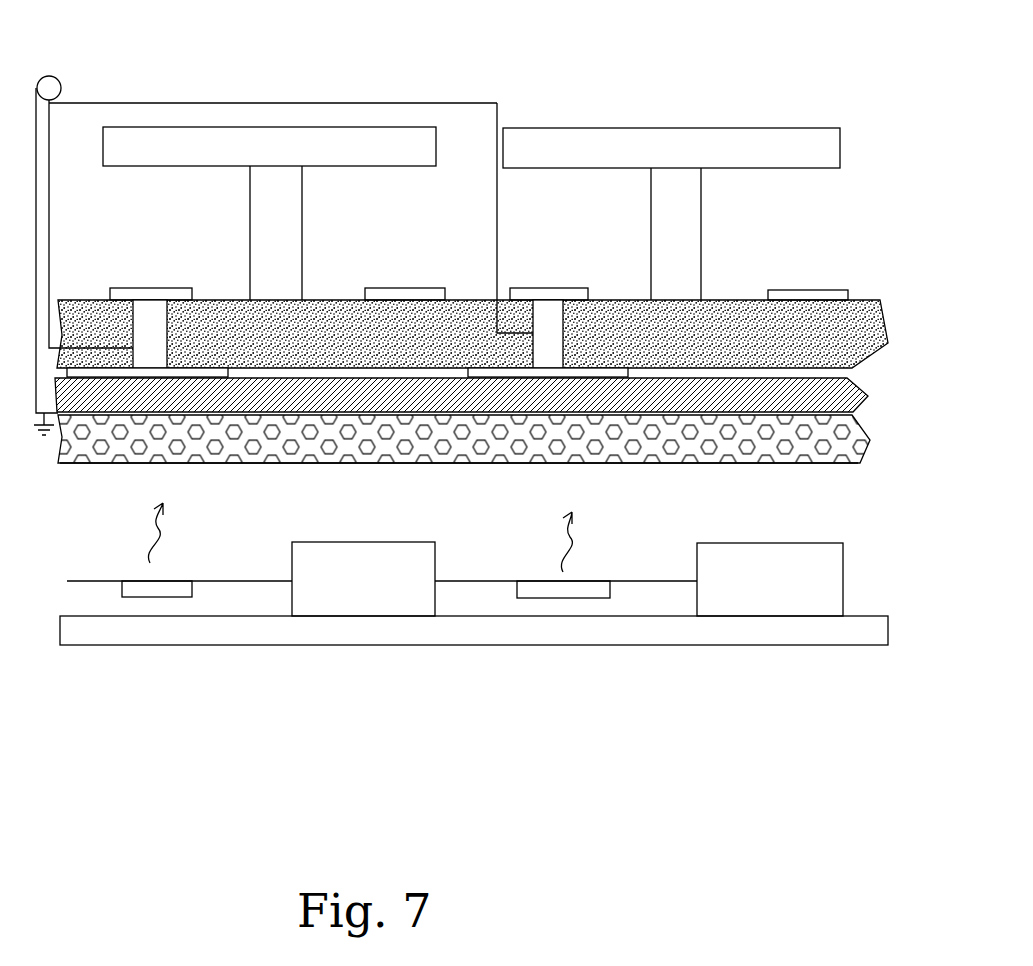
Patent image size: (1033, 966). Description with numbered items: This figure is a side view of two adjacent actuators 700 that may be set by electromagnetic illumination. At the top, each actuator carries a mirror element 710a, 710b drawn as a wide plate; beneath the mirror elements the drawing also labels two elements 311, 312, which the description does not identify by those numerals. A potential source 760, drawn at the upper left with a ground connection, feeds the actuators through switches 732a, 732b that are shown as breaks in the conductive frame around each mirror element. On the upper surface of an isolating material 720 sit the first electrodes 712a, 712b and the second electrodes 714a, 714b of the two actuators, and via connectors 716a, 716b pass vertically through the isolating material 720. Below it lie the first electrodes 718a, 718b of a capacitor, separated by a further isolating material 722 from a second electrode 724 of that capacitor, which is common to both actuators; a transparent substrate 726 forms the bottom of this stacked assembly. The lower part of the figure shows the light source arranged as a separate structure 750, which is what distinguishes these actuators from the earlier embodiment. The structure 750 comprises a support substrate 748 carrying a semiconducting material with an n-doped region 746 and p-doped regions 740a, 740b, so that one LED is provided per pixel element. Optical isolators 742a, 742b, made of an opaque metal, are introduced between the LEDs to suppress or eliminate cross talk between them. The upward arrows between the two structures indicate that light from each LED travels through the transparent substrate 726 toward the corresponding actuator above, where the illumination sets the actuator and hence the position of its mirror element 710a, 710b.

The actuators 700 is at (550, 45).
The potential source 760 is at (61, 91).
The mirror element 710a is at (245, 138).
The mirror element 710b is at (662, 135).
The switch 732a is at (52, 231).
The switch 732b is at (507, 252).
The first support post 311 is at (279, 278).
The second support post 312 is at (673, 248).
The first electrode 712a is at (134, 293).
The first electrode 712b is at (533, 293).
The second electrode 714a is at (393, 293).
The second electrode 714b is at (792, 296).
The via connector 716a is at (160, 342).
The via connector 716b is at (557, 328).
The first electrode of a capacitor 718a is at (187, 370).
The first electrode of a capacitor 718b is at (545, 373).
The isolating material 720 is at (815, 357).
The isolating material 722 is at (400, 412).
The second electrode of the capacitor 724 is at (167, 412).
The transparent substrate 726 is at (293, 440).
The p-doped region 740a is at (160, 583).
The p-doped region 740b is at (562, 590).
The optical isolator 742a is at (392, 590).
The optical isolator 742b is at (767, 577).
The n-doped region 746 is at (643, 597).
The support substrate 748 is at (293, 637).
The separate structure 750 is at (475, 660).